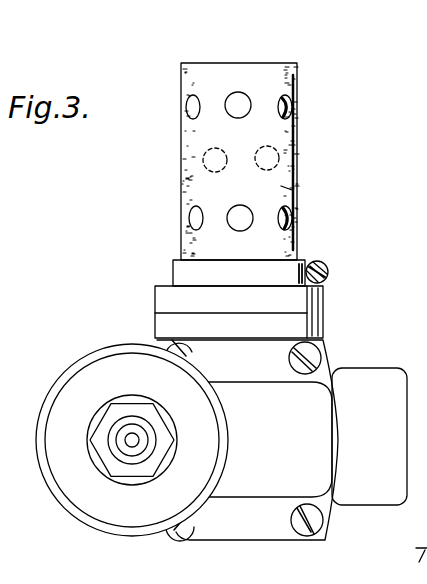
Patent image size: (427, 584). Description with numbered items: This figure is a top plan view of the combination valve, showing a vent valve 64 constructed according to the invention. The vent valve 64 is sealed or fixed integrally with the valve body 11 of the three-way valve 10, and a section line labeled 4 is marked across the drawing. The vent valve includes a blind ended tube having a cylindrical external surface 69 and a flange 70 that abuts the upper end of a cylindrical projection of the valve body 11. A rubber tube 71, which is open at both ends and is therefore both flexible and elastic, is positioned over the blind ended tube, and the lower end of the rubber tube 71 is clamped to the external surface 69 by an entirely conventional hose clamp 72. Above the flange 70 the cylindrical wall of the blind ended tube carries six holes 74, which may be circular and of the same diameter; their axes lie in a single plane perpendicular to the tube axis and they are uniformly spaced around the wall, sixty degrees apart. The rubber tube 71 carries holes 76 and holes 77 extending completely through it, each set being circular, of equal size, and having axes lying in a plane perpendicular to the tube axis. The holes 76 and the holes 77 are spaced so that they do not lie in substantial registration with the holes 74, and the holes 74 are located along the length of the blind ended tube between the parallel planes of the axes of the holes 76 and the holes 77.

The section line 4- 4 is at (238, 63).
The three-way valve 10 is at (358, 348).
The valve body 11 is at (322, 328).
The vent valve 64 is at (112, 182).
The external surface 69 is at (233, 117).
The flange 70 is at (320, 300).
The rubber tube 71 is at (282, 188).
The hose clamp 72 is at (328, 259).
The holes 74 is at (201, 163).
The holes 76 is at (187, 106).
The holes 77 is at (186, 217).